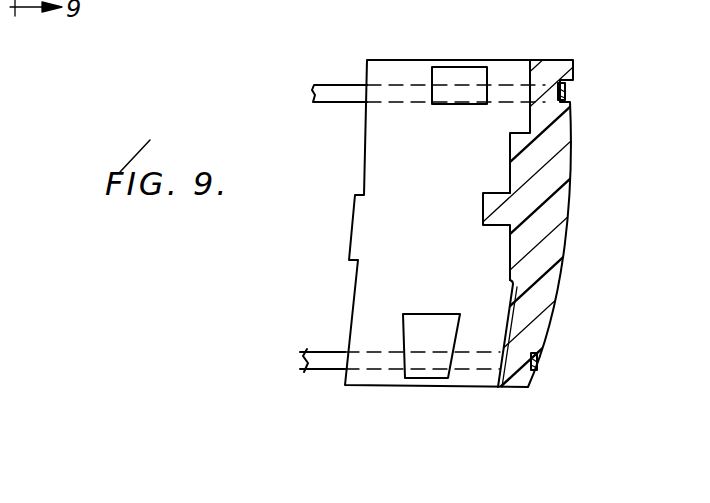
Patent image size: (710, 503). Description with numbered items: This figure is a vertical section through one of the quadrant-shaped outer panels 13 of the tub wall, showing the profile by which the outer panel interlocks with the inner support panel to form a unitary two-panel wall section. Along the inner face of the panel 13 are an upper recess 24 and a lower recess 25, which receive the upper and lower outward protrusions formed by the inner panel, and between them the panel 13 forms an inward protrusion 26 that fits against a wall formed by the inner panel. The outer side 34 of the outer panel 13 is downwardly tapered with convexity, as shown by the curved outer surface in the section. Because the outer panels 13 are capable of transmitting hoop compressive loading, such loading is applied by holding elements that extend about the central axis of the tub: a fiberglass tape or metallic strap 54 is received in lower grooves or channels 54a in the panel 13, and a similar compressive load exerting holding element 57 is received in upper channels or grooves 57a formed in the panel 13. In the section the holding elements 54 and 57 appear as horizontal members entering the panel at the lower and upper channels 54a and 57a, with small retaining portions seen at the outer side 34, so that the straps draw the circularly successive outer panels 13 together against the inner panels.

The outer panel 13 is at (600, 193).
The recess 24 is at (522, 131).
The recess 25 is at (511, 285).
The inward protrusion 26 is at (482, 213).
The outer side 34 is at (563, 235).
The holding element 54 is at (312, 350).
The lower grooves or channels 54a is at (537, 356).
The holding element 57 is at (570, 88).
The upper channels or grooves 57a is at (570, 96).